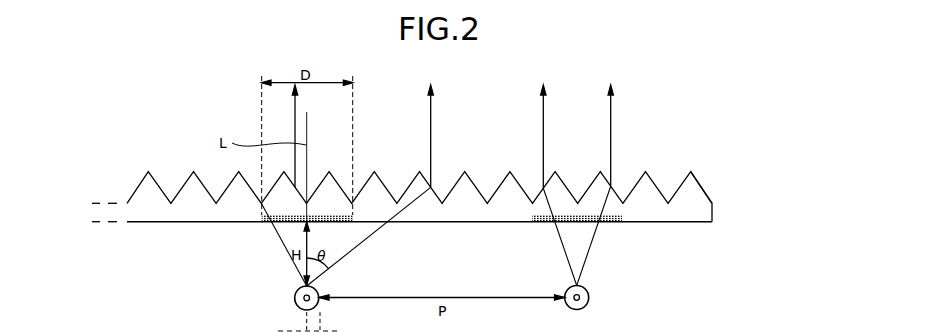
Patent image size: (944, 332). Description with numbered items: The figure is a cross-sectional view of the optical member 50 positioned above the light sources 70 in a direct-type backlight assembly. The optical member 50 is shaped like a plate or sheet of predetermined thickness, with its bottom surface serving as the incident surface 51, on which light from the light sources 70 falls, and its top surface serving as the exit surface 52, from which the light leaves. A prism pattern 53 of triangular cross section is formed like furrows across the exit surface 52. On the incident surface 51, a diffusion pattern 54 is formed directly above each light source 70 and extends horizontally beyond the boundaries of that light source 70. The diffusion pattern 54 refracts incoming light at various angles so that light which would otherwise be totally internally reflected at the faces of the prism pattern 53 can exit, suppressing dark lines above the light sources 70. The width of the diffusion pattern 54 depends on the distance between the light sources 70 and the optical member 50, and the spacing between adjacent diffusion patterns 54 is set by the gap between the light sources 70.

The optical member 50 is at (441, 212).
The incident surface 51 is at (695, 225).
The exit surface 52 is at (693, 177).
The prism pattern 53 is at (690, 192).
The diffusion pattern 54 is at (610, 223).
The light source 70 is at (294, 299).